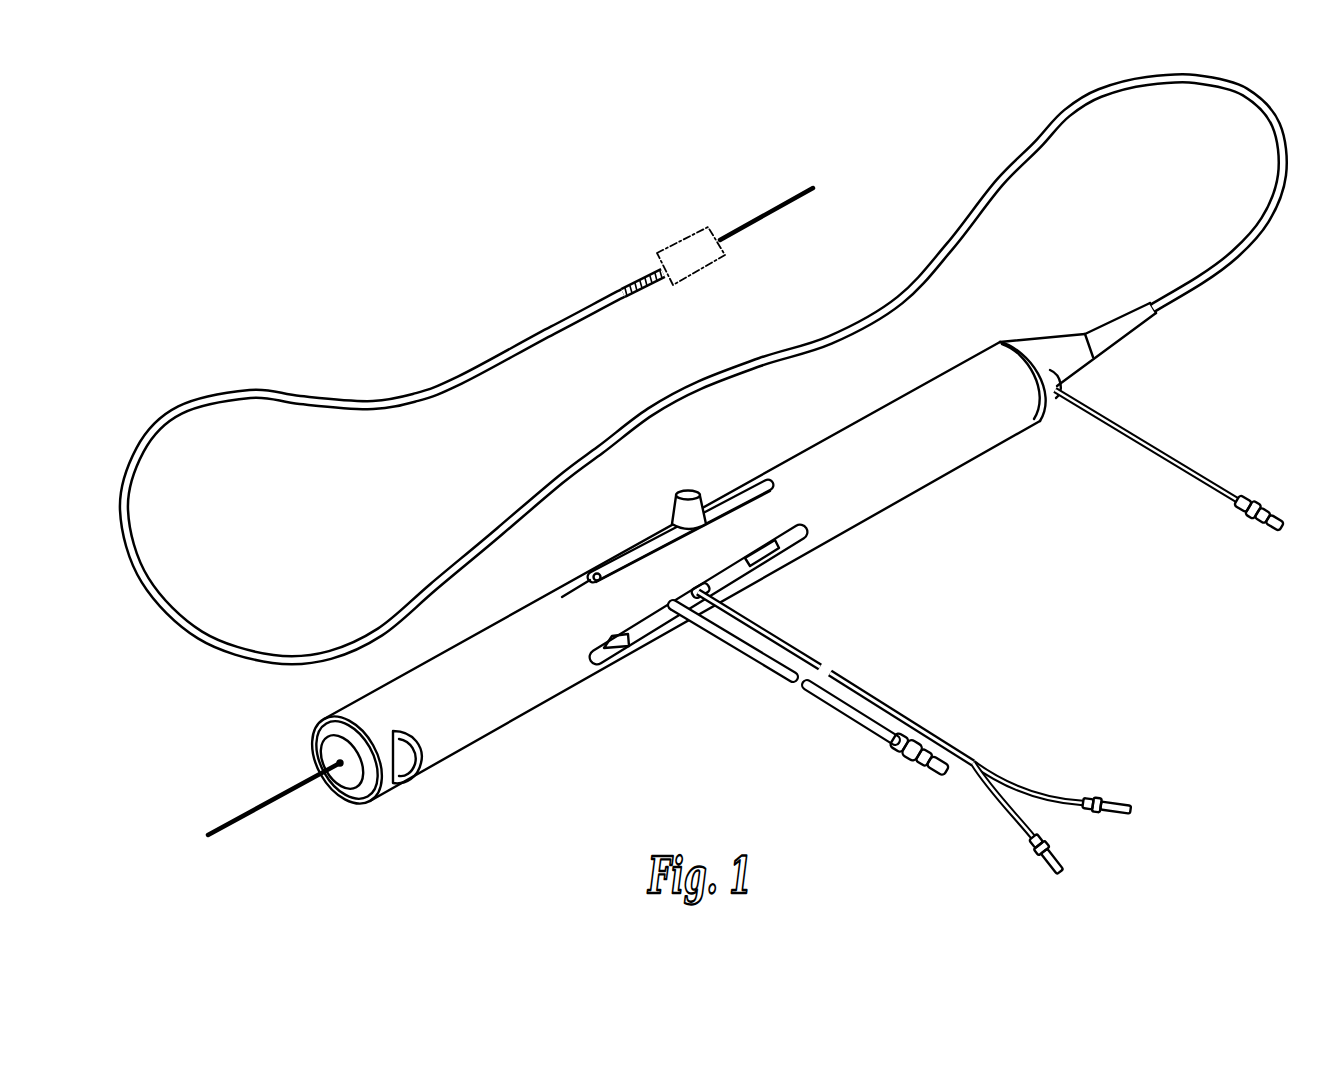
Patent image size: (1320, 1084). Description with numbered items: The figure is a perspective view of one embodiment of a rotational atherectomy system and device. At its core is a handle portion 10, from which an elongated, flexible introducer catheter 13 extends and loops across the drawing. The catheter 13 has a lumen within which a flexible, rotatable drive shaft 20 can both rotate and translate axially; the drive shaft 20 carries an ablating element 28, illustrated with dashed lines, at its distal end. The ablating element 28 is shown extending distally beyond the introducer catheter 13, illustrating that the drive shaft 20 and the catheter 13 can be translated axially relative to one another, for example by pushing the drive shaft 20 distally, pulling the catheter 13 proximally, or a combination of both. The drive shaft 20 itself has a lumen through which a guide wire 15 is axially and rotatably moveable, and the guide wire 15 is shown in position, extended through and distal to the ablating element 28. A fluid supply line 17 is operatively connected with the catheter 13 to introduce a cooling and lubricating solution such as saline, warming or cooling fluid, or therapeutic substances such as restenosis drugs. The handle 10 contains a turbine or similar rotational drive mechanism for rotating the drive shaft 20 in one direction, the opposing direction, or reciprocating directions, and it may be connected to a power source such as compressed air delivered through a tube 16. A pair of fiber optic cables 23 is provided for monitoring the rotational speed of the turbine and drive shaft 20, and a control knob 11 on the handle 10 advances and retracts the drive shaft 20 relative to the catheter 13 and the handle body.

The handle portion 10 is at (862, 437).
The control knob 11 is at (688, 490).
The introducer catheter 13 is at (1030, 165).
The guide wire 15 is at (737, 237).
The tube 16 is at (772, 672).
The fluid supply line 17 is at (1152, 440).
The drive shaft 20 is at (638, 274).
The fiber optic cables 23 is at (794, 644).
The ablating element 28 is at (675, 226).